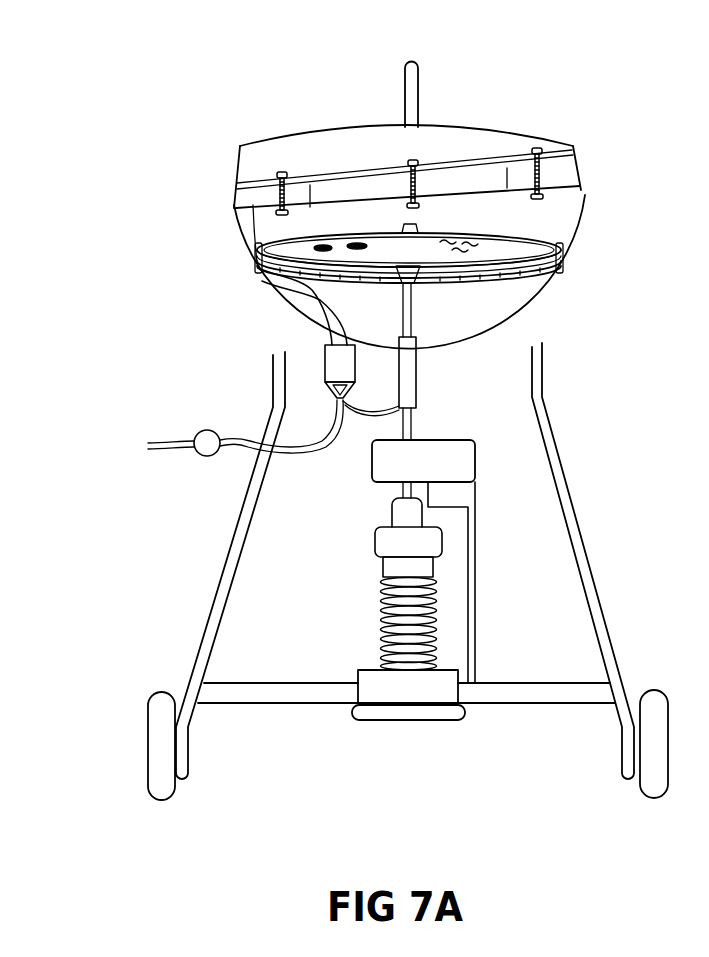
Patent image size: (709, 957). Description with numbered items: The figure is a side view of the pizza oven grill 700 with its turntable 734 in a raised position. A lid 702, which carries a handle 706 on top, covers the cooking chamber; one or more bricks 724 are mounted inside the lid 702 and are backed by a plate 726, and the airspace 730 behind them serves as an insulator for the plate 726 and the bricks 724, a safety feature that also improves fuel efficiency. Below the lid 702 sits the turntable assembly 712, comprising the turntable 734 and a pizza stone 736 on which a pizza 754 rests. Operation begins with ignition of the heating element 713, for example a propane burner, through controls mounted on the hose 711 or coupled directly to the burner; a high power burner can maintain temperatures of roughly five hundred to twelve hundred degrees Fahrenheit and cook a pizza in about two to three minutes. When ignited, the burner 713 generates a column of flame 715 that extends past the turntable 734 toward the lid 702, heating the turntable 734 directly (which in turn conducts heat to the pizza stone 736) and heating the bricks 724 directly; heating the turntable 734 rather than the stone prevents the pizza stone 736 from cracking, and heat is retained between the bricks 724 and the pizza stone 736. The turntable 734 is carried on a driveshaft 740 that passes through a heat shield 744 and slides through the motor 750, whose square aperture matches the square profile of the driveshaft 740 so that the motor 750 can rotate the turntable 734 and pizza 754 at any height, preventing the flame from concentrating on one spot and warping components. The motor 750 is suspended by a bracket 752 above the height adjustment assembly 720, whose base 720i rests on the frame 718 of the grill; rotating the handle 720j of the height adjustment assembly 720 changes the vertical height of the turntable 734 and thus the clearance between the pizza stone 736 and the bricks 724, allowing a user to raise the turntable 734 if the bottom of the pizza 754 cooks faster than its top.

The pizza oven grill 700 is at (117, 53).
The lid 702 is at (538, 140).
The lid handle 706 is at (418, 88).
The hose 711 is at (204, 450).
The cooking grate assembly 712 is at (463, 238).
The heating element 713 is at (337, 368).
The column of flame 715 is at (313, 292).
The frame 718 is at (247, 693).
The height adjustment assembly 720 is at (397, 624).
The drive base block 720i is at (367, 683).
The handle 720j is at (443, 713).
The bricks 724 is at (337, 193).
The plate 726 is at (377, 167).
The airspace 730 is at (262, 155).
The turntable 734 is at (533, 273).
The pizza stone 736 is at (562, 252).
The driveshaft 740 is at (416, 322).
The shaft sleeve 744 is at (417, 366).
The motor 750 is at (465, 458).
The bracket 752 is at (468, 527).
The pizza 754 is at (533, 235).